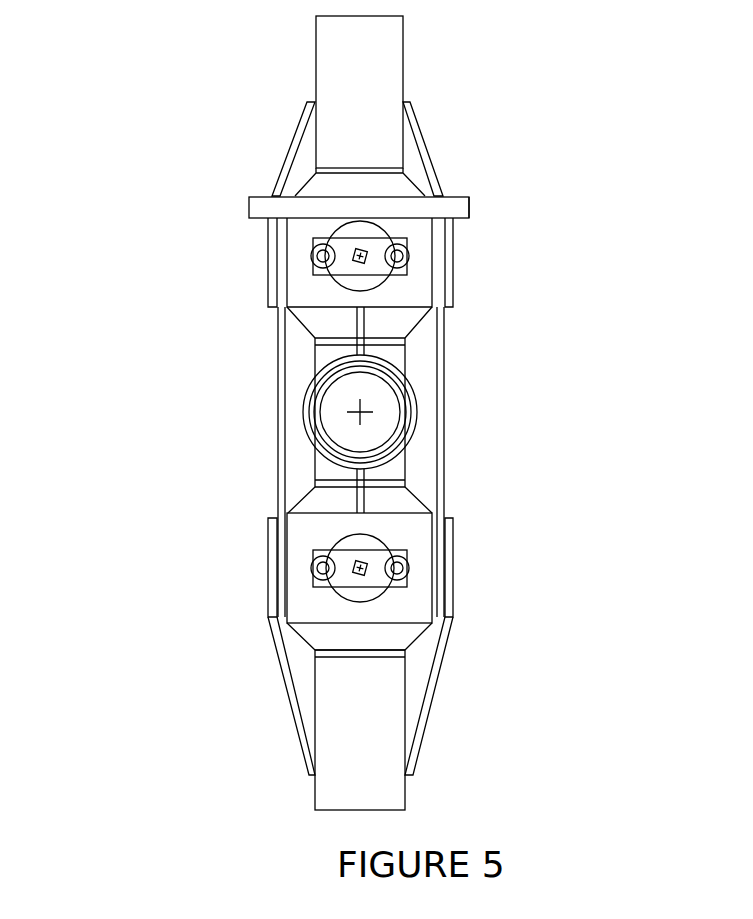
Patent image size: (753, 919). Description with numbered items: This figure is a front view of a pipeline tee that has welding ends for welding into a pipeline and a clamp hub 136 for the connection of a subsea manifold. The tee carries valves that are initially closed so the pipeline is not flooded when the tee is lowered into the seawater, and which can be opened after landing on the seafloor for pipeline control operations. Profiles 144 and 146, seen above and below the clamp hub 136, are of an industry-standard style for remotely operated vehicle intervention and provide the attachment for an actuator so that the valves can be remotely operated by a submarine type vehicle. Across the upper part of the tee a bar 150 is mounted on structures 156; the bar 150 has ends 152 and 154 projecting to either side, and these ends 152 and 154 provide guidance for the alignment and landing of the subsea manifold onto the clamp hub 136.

The clamp hub 136 is at (415, 391).
The profile 144 is at (407, 265).
The profile 146 is at (407, 560).
The bar 150 is at (370, 199).
The end 152 is at (467, 207).
The end 154 is at (260, 210).
The structure 156 is at (428, 135).